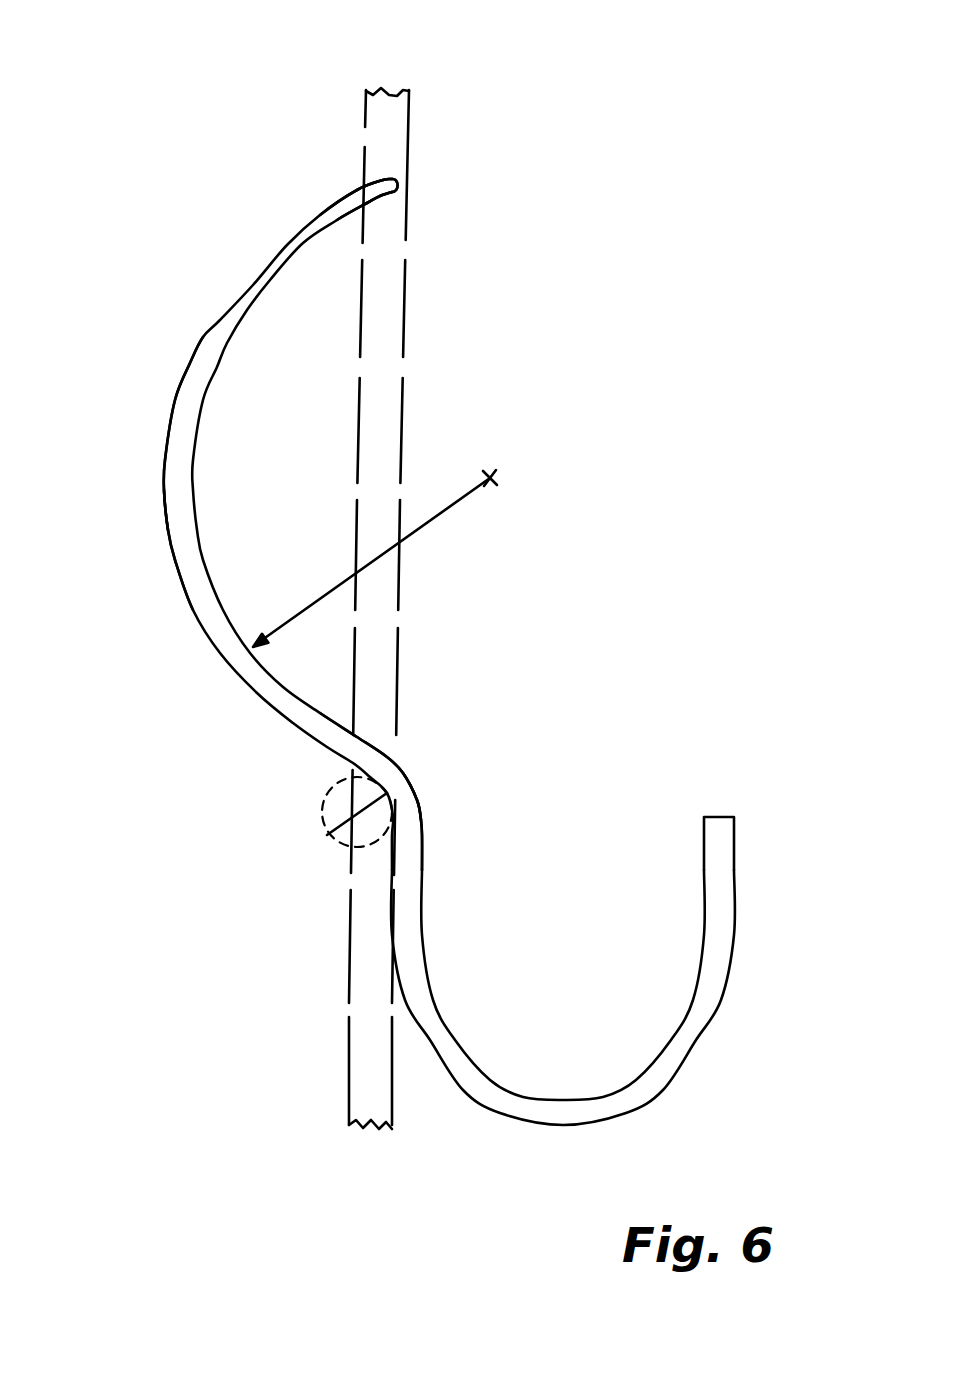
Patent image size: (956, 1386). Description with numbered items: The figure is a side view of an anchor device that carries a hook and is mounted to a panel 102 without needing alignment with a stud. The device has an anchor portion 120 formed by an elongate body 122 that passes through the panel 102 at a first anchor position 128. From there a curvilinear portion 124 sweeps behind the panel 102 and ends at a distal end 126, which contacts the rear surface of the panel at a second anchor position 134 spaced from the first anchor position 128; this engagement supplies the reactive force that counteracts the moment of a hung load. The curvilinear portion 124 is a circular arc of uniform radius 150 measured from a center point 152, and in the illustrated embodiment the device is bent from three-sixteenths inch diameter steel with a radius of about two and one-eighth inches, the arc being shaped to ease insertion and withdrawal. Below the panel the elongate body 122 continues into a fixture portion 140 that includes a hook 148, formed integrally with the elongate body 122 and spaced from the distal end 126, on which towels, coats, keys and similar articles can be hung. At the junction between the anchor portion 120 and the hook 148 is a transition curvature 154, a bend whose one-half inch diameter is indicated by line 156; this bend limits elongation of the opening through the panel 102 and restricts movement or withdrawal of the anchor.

The panel 102 is at (380, 87).
The anchor portion 120 is at (180, 329).
The elongate body 122 is at (155, 478).
The curvilinear portion 124 is at (173, 550).
The distal end 126 is at (388, 160).
The first anchor position 128 is at (412, 756).
The second anchor position 134 is at (427, 170).
The fixture portion 140 is at (732, 805).
The hook 148 is at (466, 1054).
The radius 150 is at (445, 508).
The center point 152 is at (497, 470).
The transition curvature 154 is at (413, 788).
The line indicating diameter of transition curvature 156 is at (346, 786).